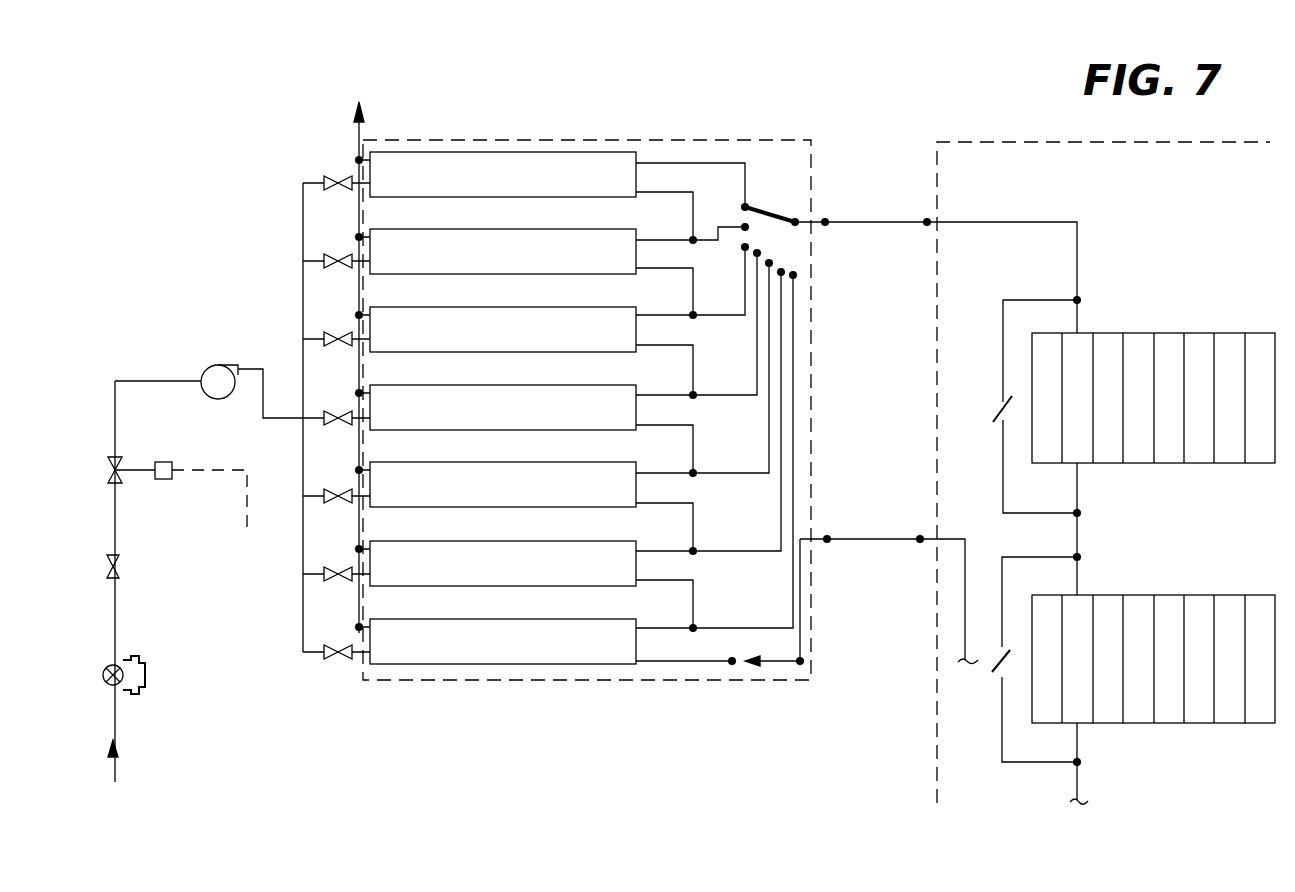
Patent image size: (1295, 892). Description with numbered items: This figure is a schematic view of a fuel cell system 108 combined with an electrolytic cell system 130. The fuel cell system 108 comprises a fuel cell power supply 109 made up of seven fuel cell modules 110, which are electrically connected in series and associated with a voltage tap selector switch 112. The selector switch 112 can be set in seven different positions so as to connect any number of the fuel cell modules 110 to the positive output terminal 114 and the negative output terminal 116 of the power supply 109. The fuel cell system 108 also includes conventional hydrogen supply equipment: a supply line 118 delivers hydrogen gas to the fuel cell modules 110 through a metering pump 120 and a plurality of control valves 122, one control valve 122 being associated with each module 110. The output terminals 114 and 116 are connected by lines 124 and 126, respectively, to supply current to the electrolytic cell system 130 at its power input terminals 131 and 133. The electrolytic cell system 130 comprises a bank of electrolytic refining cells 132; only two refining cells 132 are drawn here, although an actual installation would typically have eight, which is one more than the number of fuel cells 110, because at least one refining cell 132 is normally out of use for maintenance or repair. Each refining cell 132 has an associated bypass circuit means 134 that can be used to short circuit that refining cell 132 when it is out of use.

The fuel cell system 108 is at (303, 163).
The fuel cell power supply 109 is at (700, 140).
The fuel cell modules 110 is at (499, 183).
The voltage tap selector switch 112 is at (773, 238).
The positive output terminal 114 is at (825, 222).
The negative output terminal 116 is at (827, 539).
The supply line 118 is at (118, 531).
The metering pump 120 is at (228, 365).
The control valves 122 is at (348, 190).
The line 124 is at (877, 222).
The line 126 is at (893, 541).
The electrolytic cell system 130 is at (985, 140).
The power input terminal 131 is at (927, 222).
The electrolytic refining cells 132 is at (1150, 335).
The power input terminal 133 is at (920, 539).
The bypass circuit means 134 is at (1050, 300).